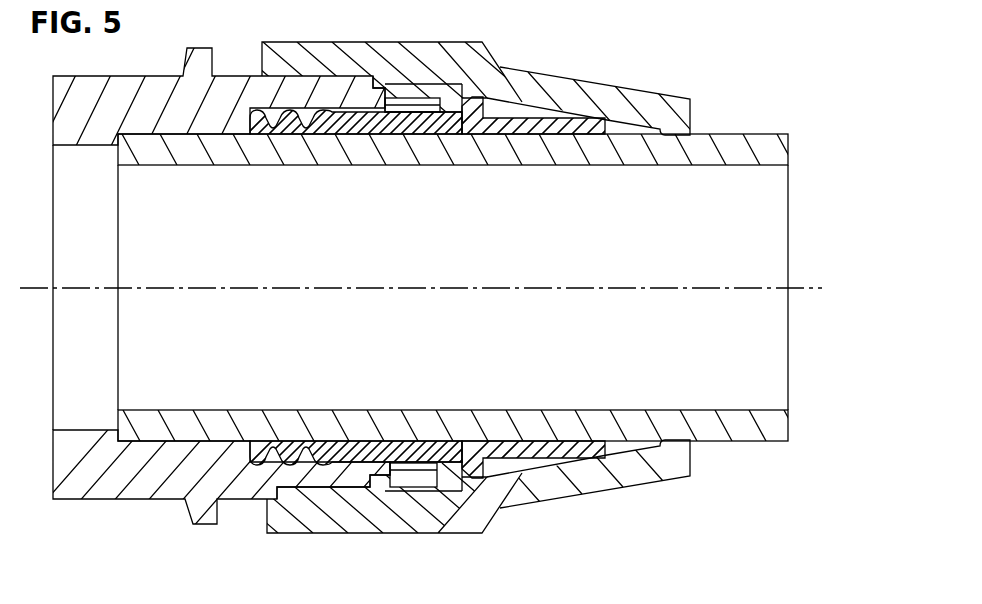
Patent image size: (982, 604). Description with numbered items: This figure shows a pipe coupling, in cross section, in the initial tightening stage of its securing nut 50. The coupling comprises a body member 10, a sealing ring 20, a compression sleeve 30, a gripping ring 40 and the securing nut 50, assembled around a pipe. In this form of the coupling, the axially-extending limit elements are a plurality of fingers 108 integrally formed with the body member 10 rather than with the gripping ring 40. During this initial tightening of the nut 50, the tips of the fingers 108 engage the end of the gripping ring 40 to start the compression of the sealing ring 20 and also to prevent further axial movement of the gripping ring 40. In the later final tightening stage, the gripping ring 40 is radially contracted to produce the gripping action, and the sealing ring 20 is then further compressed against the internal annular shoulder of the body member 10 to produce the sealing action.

The body member 10 is at (158, 502).
The sealing ring 20 is at (288, 464).
The compression sleeve 30 is at (422, 468).
The gripping ring 40 is at (573, 120).
The securing nut 50 is at (678, 488).
The fingers 108 is at (432, 100).